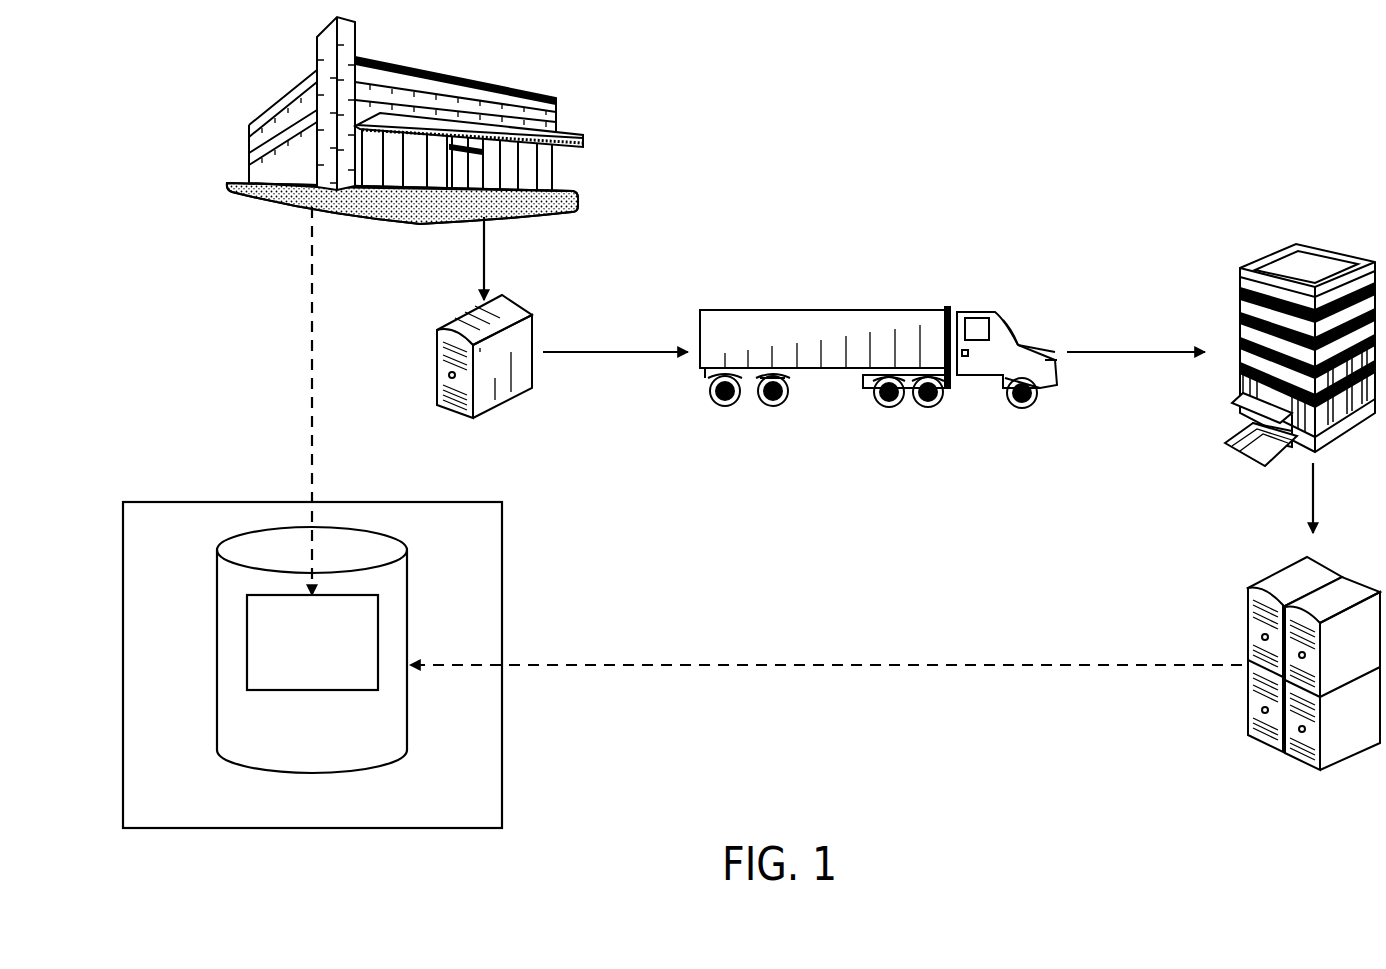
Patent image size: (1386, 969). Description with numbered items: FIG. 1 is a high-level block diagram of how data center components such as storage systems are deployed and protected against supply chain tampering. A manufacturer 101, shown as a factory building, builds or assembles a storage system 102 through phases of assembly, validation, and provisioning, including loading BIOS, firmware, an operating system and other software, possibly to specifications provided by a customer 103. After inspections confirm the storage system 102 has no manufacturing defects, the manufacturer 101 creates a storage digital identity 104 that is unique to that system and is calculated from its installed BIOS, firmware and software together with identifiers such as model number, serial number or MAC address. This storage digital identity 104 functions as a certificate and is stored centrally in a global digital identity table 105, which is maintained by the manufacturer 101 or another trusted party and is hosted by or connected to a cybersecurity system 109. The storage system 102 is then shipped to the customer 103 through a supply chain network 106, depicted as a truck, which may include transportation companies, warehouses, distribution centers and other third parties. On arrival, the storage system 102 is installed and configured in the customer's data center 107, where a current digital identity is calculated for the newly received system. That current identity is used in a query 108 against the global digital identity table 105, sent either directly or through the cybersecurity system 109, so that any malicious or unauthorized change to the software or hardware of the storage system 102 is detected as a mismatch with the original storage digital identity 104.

The manufacturer 101 is at (557, 105).
The storage system 102 is at (508, 316).
The customer 103 is at (1305, 265).
The storage digital identity 104 is at (243, 643).
The global digital identity table 105 is at (217, 648).
The supply chain network 106 is at (822, 310).
The data center 107 is at (1252, 703).
The query 108 is at (828, 665).
The cybersecurity system 109 is at (192, 502).